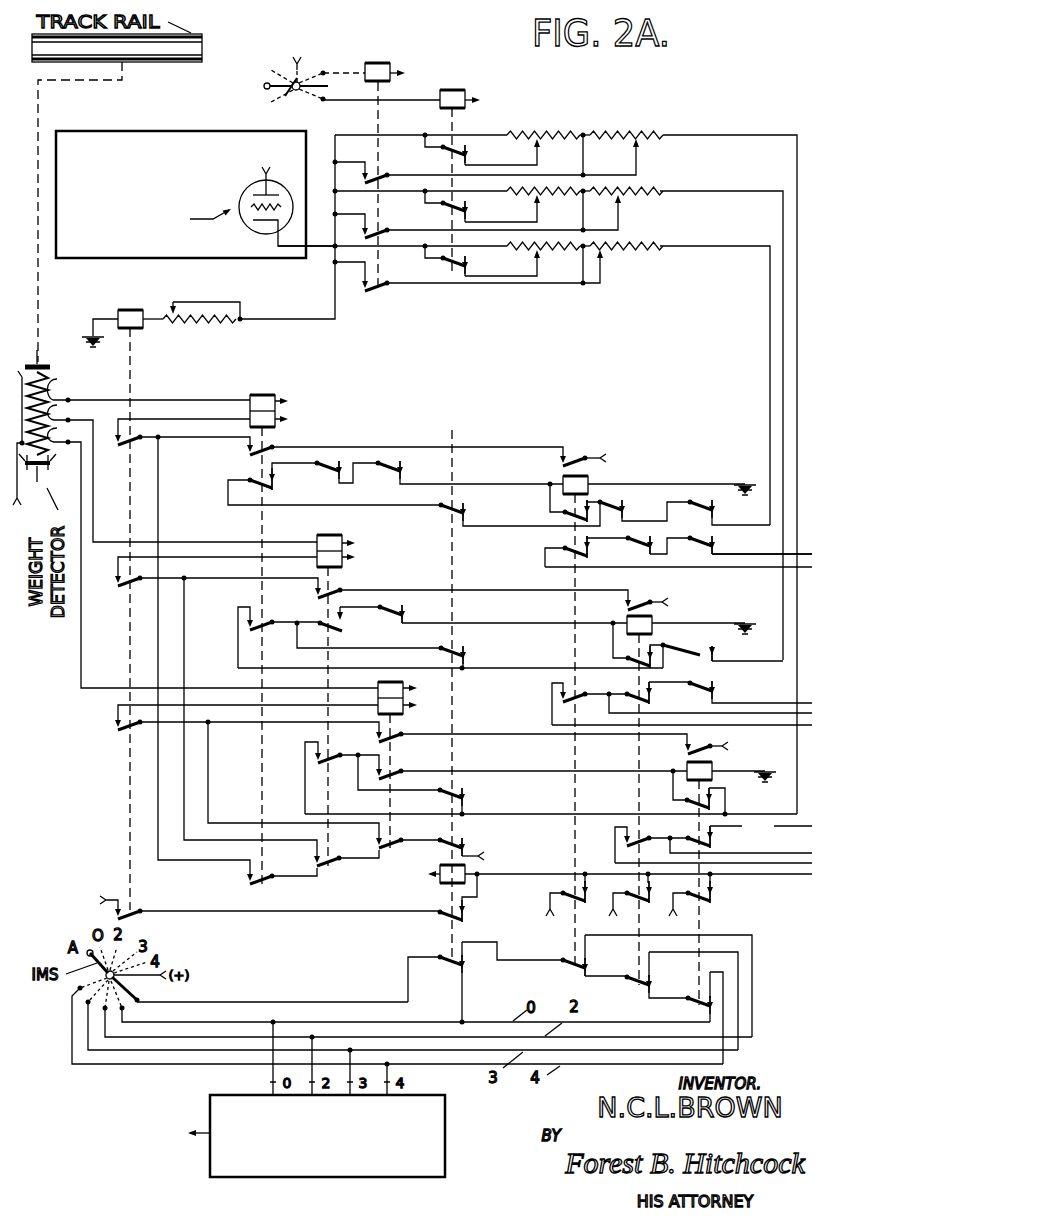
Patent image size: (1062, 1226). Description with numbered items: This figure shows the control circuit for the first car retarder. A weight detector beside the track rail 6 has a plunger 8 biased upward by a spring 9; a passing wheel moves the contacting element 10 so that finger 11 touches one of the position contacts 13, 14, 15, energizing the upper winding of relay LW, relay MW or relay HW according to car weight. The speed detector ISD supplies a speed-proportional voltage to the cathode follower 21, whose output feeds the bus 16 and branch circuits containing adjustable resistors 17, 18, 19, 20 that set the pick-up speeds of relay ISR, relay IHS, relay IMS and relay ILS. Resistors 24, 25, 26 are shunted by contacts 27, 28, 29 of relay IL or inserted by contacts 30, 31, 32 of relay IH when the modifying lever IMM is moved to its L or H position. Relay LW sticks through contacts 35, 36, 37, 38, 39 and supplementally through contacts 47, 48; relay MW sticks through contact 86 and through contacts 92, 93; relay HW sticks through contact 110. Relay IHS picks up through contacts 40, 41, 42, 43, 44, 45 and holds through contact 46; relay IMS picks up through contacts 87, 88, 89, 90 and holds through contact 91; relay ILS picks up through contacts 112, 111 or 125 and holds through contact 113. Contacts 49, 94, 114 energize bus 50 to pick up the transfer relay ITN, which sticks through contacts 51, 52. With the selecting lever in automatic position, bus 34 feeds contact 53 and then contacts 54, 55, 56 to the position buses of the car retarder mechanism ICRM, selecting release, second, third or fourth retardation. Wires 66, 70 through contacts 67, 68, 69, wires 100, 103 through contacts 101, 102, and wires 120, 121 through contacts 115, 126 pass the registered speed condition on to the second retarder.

The track rail 6 is at (173, 64).
The plunger 8 is at (40, 362).
The spring 9 is at (48, 465).
The contacting element 10 is at (51, 372).
The finger 11 is at (20, 371).
The position contact 13 is at (57, 388).
The position contact 14 is at (62, 418).
The position contact 15 is at (62, 440).
The bus 16 is at (333, 276).
The adjustable resistor 17 is at (208, 324).
The adjustable resistor 18 is at (649, 248).
The adjustable resistor 19 is at (649, 193).
The adjustable resistor 20 is at (666, 137).
The cathode follower 21 is at (273, 187).
The resistor 24 is at (434, 259).
The resistor 25 is at (462, 204).
The resistor 26 is at (462, 148).
The contact of relay 1L 27 is at (388, 281).
The contact of relay 1L 28 is at (388, 231).
The contact of relay 1L 29 is at (388, 176).
The back contact of relay 1H 30 is at (463, 262).
The back contact of relay 1H 31 is at (463, 207).
The back contact of relay 1H 32 is at (463, 152).
The bus 34 is at (256, 1001).
The back contact of relay 1TN 35 is at (463, 843).
The contact of relay HW 36 is at (324, 794).
The contact of relay MW 37 is at (281, 731).
The front contact of relay LW 38 is at (274, 881).
The front contact of relay 1SR 39 is at (176, 443).
The back contact of relay 1LS 40 is at (721, 515).
The back contact of relay 1MS 41 is at (644, 515).
The back contact of relay 1TN 42 is at (444, 510).
The front contact of relay LW 43 is at (334, 484).
The back contact of relay MW 44 is at (339, 476).
The back contact of relay HW 45 is at (385, 476).
The front contact of relay 1HS 46 is at (562, 516).
The front contact of relay 1HS 47 is at (580, 458).
The front contact of relay LW 48 is at (276, 452).
The front contact of relay 1HS 49 is at (570, 903).
The bus 50 is at (514, 873).
The front contact of relay 1SR 51 is at (138, 915).
The front contact of relay 1TN 52 is at (450, 916).
The front contact of relay 1TN 53 is at (444, 964).
The contact of relay 1HS 54 is at (579, 970).
The contact of relay 1MS 55 is at (642, 985).
The contact of relay 1LS 56 is at (702, 1006).
The wire 66 is at (760, 568).
The front contact of relay 1HS 67 is at (562, 548).
The back contact of relay 1MS 68 is at (646, 549).
The back contact of relay 1LS 69 is at (742, 549).
The wire 70 is at (745, 554).
The front contact of relay 1SR 86 is at (209, 584).
The back contact of relay 1LS 87 is at (722, 656).
The back contact of relay 1TN 88 is at (463, 653).
The front contact of relay MW 89 is at (343, 631).
The back contact of relay HW 90 is at (403, 613).
The front contact of relay 1MS 91 is at (626, 661).
The front contact of relay 1MS 92 is at (648, 600).
The front contact of relay MW 93 is at (314, 600).
The front contact of relay 1MS 94 is at (632, 903).
The wire 100 is at (760, 727).
The front contact of relay 1MS 101 is at (621, 703).
The back contact of relay 1LS 102 is at (713, 686).
The wire 103 is at (758, 703).
The front contact of relay 1SR 110 is at (235, 733).
The front contact of relay HW 111 is at (531, 779).
The back contact of relay 1TN 112 is at (440, 795).
The front contact of relay 1LS 113 is at (684, 803).
The front contact of relay 1LS 114 is at (703, 901).
The front contact of relay 1LS 115 is at (715, 839).
The wire 120 is at (771, 856).
The wire 121 is at (761, 828).
The front contact of relay MW 125 is at (342, 778).
The front contact 126 is at (651, 845).
The relay 1L IL is at (390, 60).
The relay 1H IH is at (470, 89).
The modifying lever IMM is at (287, 96).
The speed detector ISD is at (195, 181).
The relay 1SR ISR is at (122, 317).
The light weight relay LW is at (278, 400).
The medium weight relay MW is at (343, 541).
The heavy weight relay HW is at (378, 688).
The relay 1HS IHS is at (582, 479).
The relay 1MS IMS is at (579, 616).
The relay 1LS ILS is at (686, 764).
The transfer relay ITN is at (452, 866).
The car retarder operating mechanism ICRM is at (447, 1118).